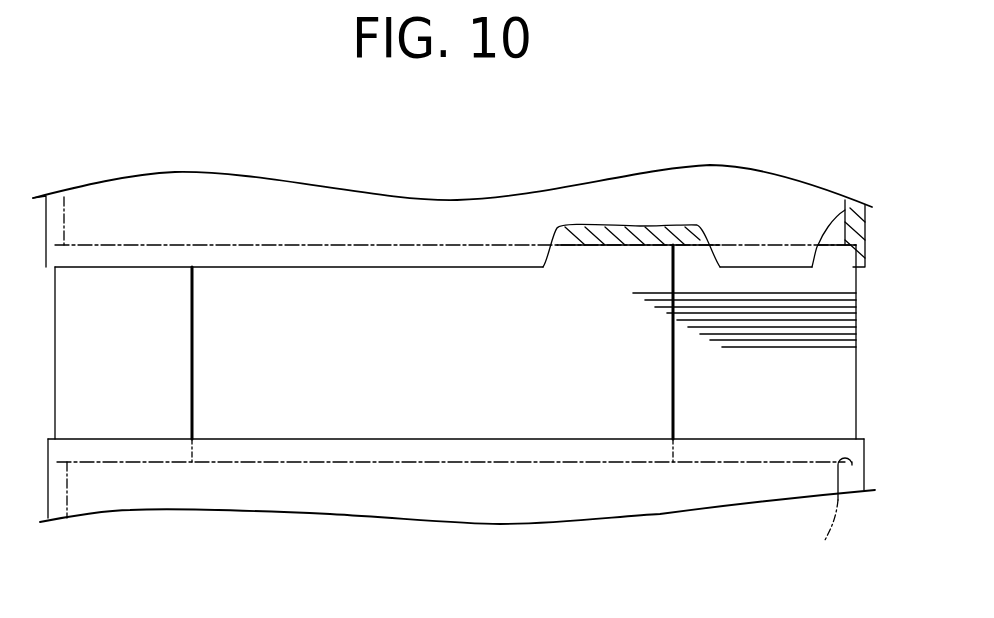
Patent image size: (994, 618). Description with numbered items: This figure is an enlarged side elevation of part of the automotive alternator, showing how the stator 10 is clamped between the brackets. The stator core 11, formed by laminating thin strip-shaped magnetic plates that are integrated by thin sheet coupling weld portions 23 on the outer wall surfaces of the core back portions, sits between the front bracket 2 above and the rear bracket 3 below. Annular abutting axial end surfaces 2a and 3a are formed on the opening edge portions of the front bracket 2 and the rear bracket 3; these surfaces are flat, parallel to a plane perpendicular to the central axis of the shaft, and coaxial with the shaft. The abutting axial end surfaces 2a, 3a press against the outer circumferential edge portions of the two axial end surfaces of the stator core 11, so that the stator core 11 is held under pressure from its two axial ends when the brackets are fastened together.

The front bracket 2 is at (137, 185).
The abutting axial end surface 2a is at (630, 245).
The rear bracket 3 is at (165, 492).
The abutting axial end surface 3a is at (832, 522).
The stator 10 is at (858, 323).
The stator core 11 is at (850, 384).
The thin sheet coupling weld portion 23 is at (195, 392).